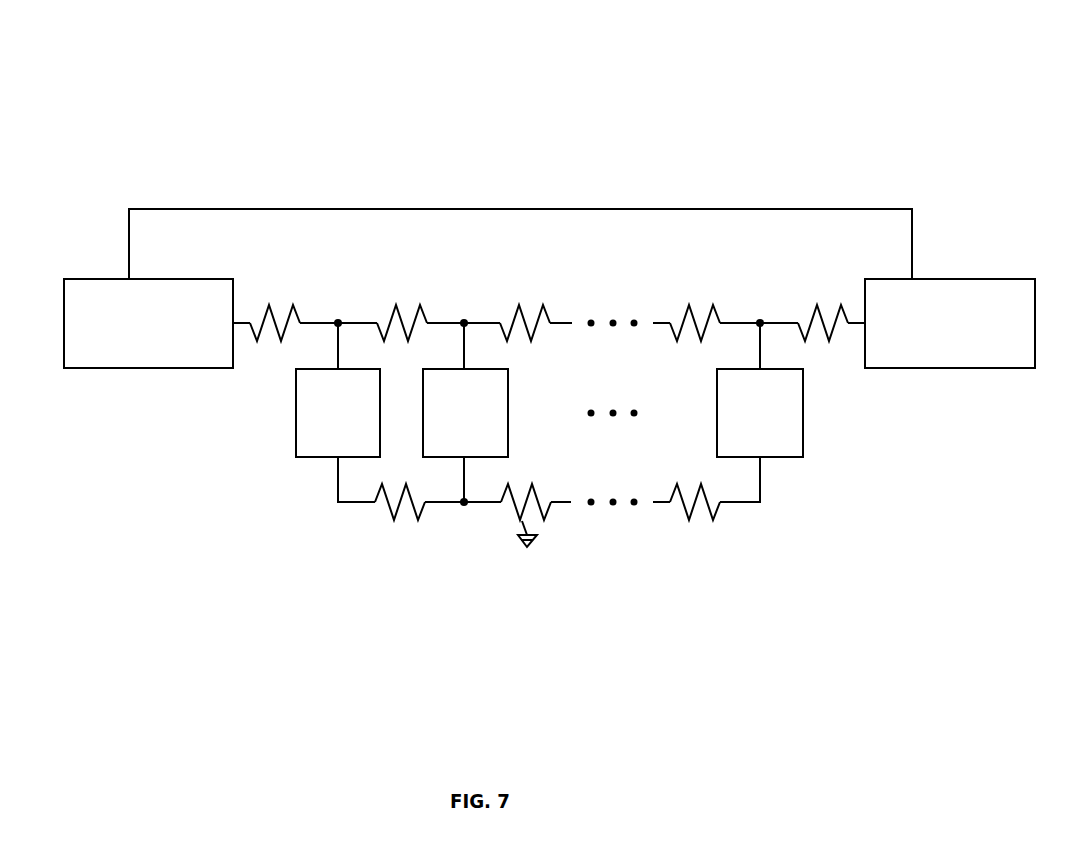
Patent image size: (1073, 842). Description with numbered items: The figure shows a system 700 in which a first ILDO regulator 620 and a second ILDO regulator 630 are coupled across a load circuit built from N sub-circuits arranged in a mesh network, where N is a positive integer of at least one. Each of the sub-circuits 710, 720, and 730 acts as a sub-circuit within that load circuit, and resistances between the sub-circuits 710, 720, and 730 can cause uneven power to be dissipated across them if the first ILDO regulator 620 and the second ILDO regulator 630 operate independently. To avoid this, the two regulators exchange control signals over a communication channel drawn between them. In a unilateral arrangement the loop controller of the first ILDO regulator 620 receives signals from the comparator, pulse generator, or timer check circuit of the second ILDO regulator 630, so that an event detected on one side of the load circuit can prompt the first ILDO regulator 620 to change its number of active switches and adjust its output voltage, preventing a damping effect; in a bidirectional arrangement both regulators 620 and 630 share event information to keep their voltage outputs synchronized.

The system 700 is at (946, 66).
The first ILDO regulator 620 is at (182, 279).
The second ILDO regulator 630 is at (952, 279).
The sub-circuit 710 is at (380, 397).
The sub-circuit 720 is at (508, 418).
The sub-circuit 730 is at (803, 432).